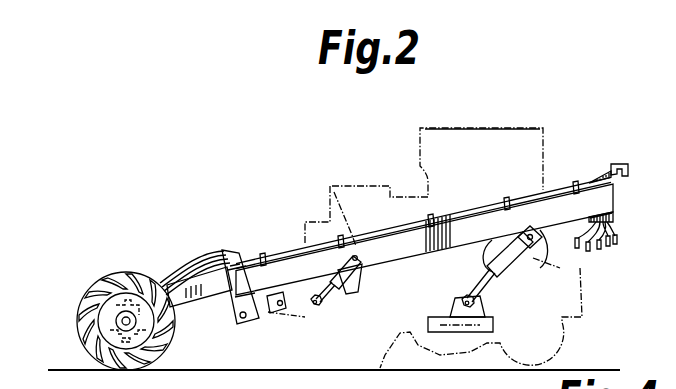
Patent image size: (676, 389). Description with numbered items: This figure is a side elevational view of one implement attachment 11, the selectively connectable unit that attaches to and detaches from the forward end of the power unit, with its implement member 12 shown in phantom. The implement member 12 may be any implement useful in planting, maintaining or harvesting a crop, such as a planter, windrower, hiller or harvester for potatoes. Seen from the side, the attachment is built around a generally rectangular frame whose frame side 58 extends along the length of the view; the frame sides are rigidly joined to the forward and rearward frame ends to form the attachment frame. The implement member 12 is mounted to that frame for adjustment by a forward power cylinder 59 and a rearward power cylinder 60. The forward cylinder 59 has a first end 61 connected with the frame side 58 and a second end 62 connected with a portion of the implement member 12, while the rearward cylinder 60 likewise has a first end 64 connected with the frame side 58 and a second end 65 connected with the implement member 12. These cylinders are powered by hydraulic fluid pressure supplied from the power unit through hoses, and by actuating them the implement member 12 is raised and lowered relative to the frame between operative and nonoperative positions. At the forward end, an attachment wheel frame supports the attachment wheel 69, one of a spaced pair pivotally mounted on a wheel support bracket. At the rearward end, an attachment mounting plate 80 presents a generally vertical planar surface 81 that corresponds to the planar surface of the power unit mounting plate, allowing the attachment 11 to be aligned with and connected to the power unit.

The implement attachment 11 is at (277, 235).
The implement member 12 is at (482, 109).
The frame side 58 is at (483, 226).
The forward power cylinder 59 is at (350, 285).
The rearward power cylinder 60 is at (580, 268).
The first end 61 is at (332, 186).
The second end 62 is at (302, 318).
The first end 64 is at (497, 273).
The second end 65 is at (458, 302).
The attachment wheel 69 is at (118, 270).
The attachment mounting plate 80 is at (600, 168).
The vertical planar surface 81 is at (613, 218).